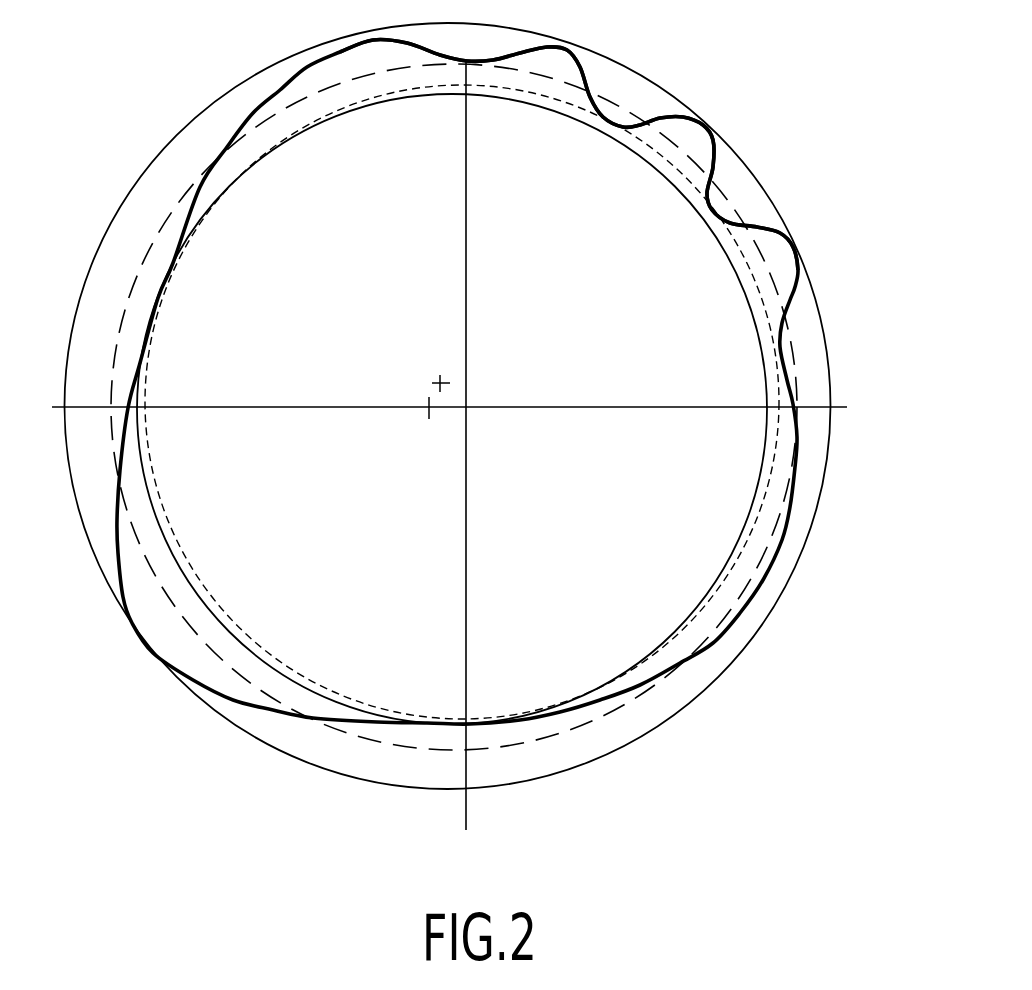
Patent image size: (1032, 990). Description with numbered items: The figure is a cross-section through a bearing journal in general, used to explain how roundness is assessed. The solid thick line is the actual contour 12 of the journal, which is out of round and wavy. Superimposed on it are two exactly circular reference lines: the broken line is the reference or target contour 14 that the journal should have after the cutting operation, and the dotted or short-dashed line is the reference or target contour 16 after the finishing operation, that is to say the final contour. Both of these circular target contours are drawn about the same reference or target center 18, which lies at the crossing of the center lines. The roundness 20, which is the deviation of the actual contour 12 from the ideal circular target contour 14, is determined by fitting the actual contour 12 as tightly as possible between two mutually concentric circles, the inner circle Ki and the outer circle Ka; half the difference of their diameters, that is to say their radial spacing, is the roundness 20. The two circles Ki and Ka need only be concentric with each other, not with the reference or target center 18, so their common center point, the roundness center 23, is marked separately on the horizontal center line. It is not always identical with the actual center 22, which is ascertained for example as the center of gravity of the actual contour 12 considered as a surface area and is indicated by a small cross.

The actual contour 12 is at (790, 294).
The reference or target contour after the cutting operation 14 is at (775, 538).
The reference or target contour after the finishing operation 16 is at (725, 583).
The reference or target center 18 is at (467, 408).
The roundness 20 is at (712, 125).
The actual center 22 is at (439, 382).
The roundness center 23 is at (428, 410).
The outer circle Ka is at (737, 158).
The inner circle Ki is at (645, 171).